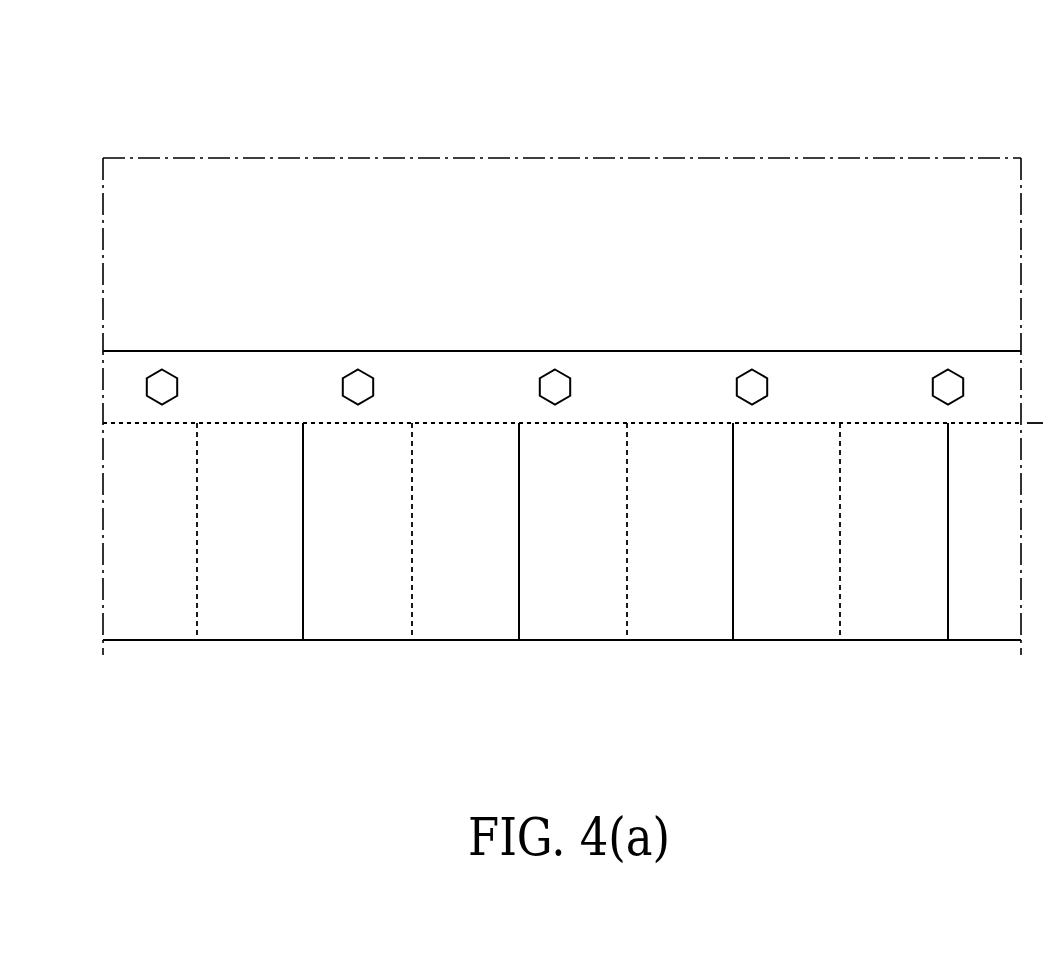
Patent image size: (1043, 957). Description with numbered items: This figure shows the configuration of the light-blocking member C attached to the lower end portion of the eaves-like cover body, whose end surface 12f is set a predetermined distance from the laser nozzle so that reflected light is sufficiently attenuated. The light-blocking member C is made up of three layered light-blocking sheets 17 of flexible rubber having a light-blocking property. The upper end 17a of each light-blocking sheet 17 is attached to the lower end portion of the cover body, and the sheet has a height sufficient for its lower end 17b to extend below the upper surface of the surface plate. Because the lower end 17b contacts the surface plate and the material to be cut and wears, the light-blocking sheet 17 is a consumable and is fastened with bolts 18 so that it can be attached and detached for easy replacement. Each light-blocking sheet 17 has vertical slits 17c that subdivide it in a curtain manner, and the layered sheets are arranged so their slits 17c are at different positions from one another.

The end surface 12f is at (545, 205).
The upper end 17a is at (638, 350).
The bolts 18 is at (360, 383).
The light-blocking sheet 17 is at (683, 587).
The lower end 17b is at (580, 640).
The slits 17c is at (840, 593).
The light-blocking member C is at (398, 662).